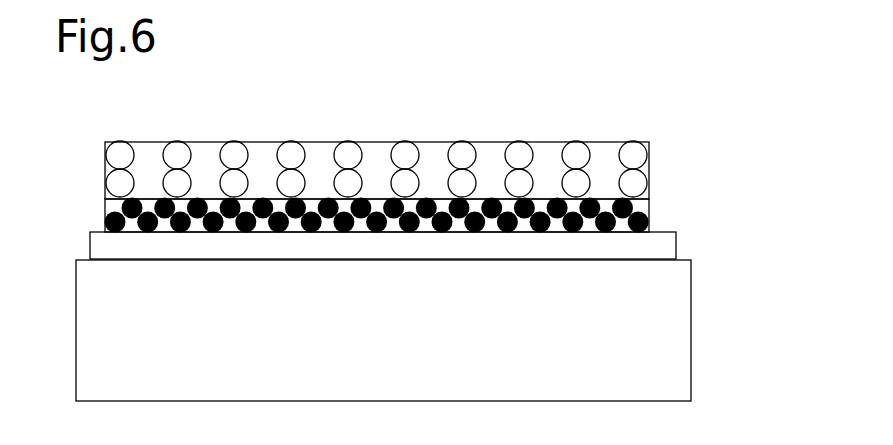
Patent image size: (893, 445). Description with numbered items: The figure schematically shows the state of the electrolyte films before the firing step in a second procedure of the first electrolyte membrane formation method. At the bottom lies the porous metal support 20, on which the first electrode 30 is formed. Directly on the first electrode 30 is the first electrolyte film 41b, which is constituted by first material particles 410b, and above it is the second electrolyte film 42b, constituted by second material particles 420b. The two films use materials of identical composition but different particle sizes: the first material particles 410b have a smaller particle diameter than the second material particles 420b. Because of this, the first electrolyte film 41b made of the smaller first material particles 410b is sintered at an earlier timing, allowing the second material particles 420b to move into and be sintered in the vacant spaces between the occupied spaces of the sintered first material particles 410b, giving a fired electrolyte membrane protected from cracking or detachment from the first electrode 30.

The porous metal support 20 is at (105, 344).
The first electrode 30 is at (105, 243).
The first electrolyte film 41b is at (649, 208).
The second electrolyte film 42b is at (649, 162).
The first material particles 410b is at (130, 209).
The second material particles 420b is at (235, 153).